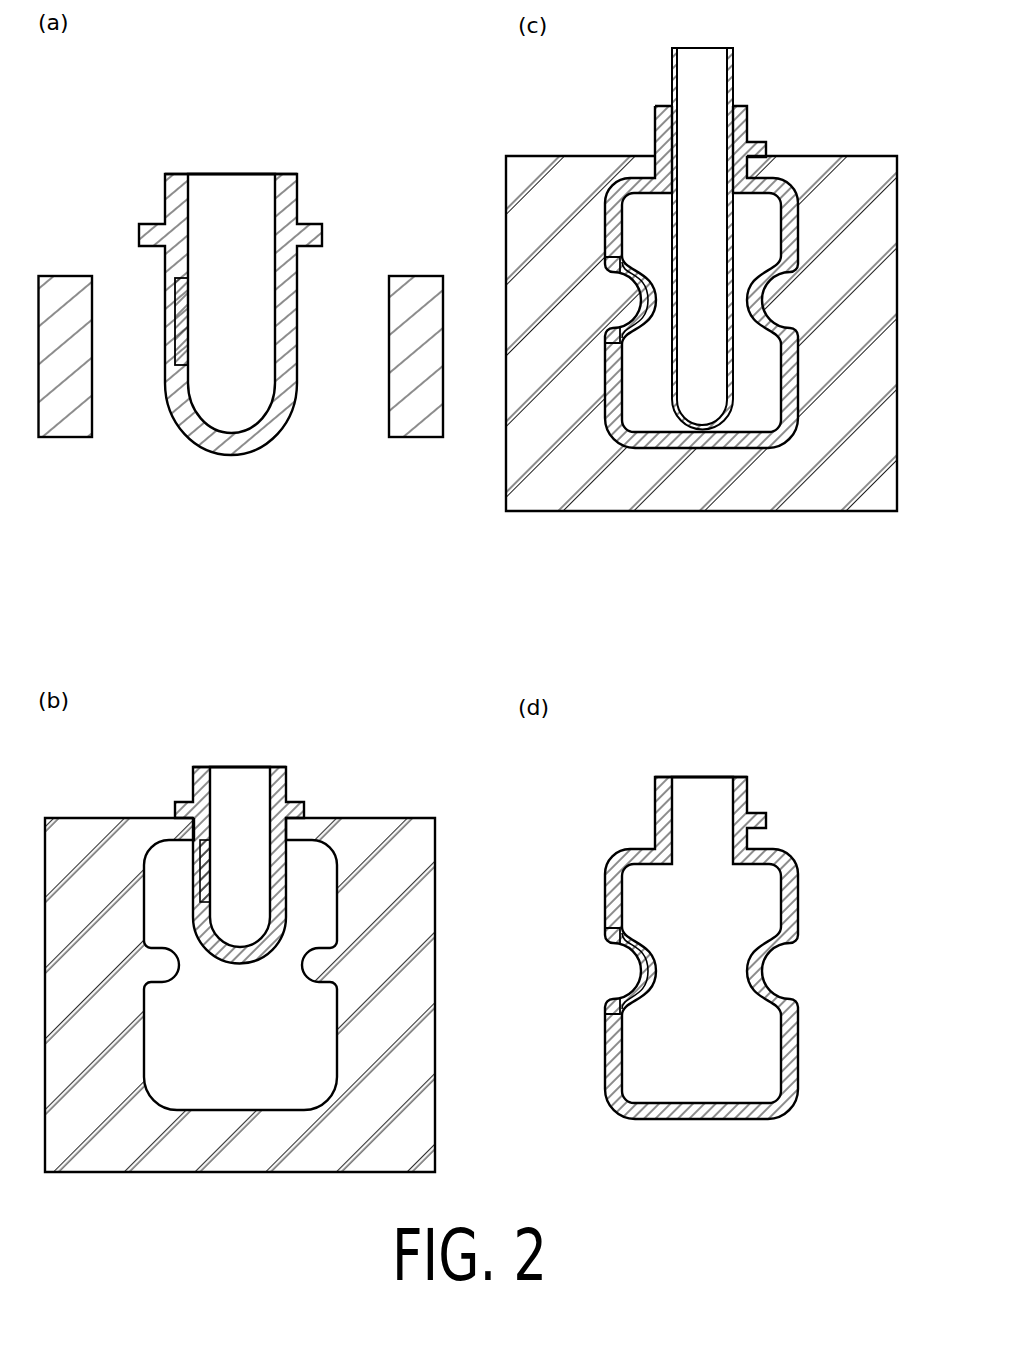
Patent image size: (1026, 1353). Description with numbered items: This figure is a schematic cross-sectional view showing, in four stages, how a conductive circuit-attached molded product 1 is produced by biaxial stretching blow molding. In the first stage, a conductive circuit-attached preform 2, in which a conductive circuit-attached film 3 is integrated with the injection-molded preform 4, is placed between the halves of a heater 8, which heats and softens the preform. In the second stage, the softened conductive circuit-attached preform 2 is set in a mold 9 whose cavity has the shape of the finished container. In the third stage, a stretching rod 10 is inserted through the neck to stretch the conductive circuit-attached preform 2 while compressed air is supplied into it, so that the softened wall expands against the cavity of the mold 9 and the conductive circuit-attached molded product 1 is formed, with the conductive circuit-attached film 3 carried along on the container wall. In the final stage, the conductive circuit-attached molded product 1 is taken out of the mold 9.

The conductive circuit-attached molded product 1 is at (730, 740).
The conductive circuit-attached preform 2 is at (253, 286).
The conductive circuit-attached film 3 is at (188, 302).
The preform 4 is at (297, 318).
The heater 8 is at (80, 438).
The mold 9 is at (373, 817).
The stretching rod 10 is at (735, 52).